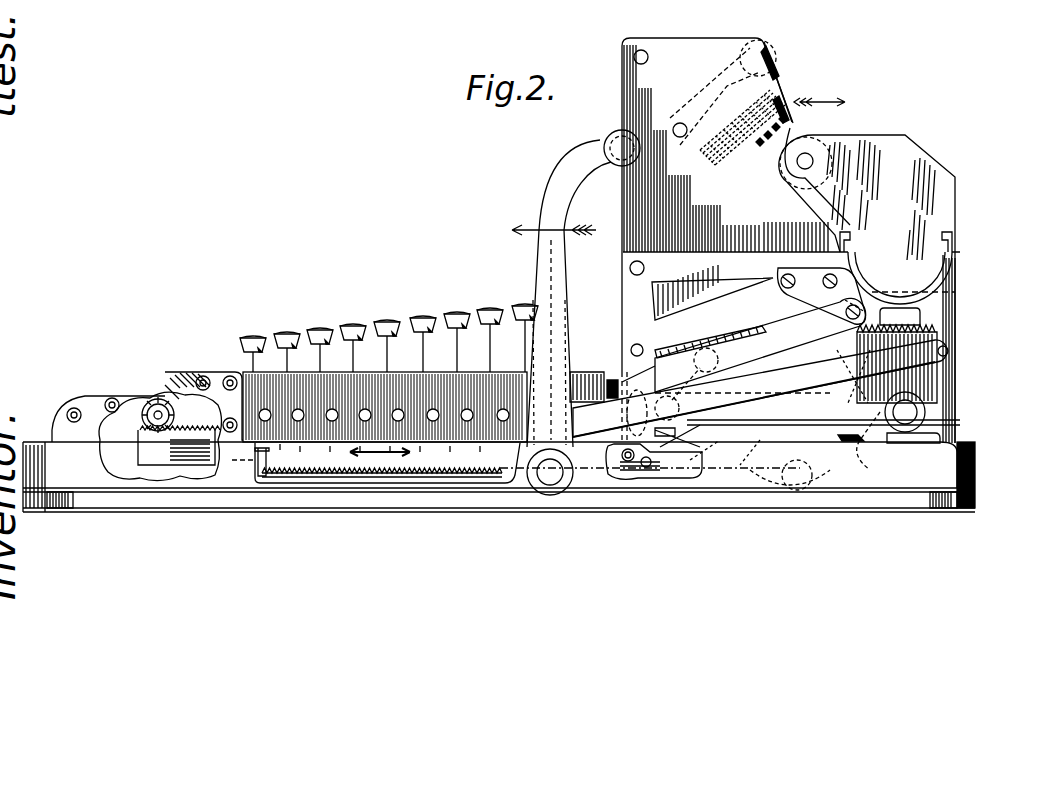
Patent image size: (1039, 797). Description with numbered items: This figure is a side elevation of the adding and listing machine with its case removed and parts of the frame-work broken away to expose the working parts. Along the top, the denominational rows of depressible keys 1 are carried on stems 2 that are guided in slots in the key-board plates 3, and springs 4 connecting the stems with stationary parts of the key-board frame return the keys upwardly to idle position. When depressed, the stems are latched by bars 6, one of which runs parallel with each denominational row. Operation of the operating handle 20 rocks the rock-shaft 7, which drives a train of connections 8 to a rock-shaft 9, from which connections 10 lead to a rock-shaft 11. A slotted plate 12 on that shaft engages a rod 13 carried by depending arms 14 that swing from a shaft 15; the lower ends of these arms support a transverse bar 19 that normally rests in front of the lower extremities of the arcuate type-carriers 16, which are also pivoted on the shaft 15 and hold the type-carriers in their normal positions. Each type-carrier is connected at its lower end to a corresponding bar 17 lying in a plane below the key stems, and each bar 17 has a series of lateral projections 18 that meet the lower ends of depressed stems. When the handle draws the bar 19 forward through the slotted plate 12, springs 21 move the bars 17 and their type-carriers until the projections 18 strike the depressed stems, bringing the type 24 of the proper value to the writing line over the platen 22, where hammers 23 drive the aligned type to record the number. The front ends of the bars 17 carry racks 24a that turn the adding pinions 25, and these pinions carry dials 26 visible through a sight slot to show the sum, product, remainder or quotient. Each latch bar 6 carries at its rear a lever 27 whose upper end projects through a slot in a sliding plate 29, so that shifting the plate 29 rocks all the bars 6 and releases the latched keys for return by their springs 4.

The depressible keys 1 is at (389, 350).
The stems 2 is at (348, 358).
The key-board plates 3 is at (448, 372).
The springs 4 is at (318, 392).
The bars 6 is at (698, 360).
The rock-shaft 7 is at (550, 472).
The train of connections 8 is at (975, 392).
The rock-shaft 9 is at (910, 415).
The connections 10 is at (690, 462).
The rock-shaft 11 is at (672, 392).
The slotted plate 12 is at (748, 432).
The rod 13 is at (797, 478).
The depending arms 14 is at (832, 348).
The shaft 15 is at (955, 292).
The arcuate type-carriers 16 is at (783, 110).
The bars 17 is at (480, 452).
The lateral projections 18 is at (312, 452).
The transverse bar 19 is at (842, 440).
The operating handle 20 is at (542, 263).
The springs 21 is at (392, 472).
The platen 22 is at (816, 138).
The hammers 23 is at (780, 66).
The type 24 is at (807, 190).
The racks 24a is at (206, 432).
The adding pinions 25 is at (150, 398).
The dials 26 is at (130, 400).
The lever 27 is at (603, 368).
The sliding plate 29 is at (625, 358).